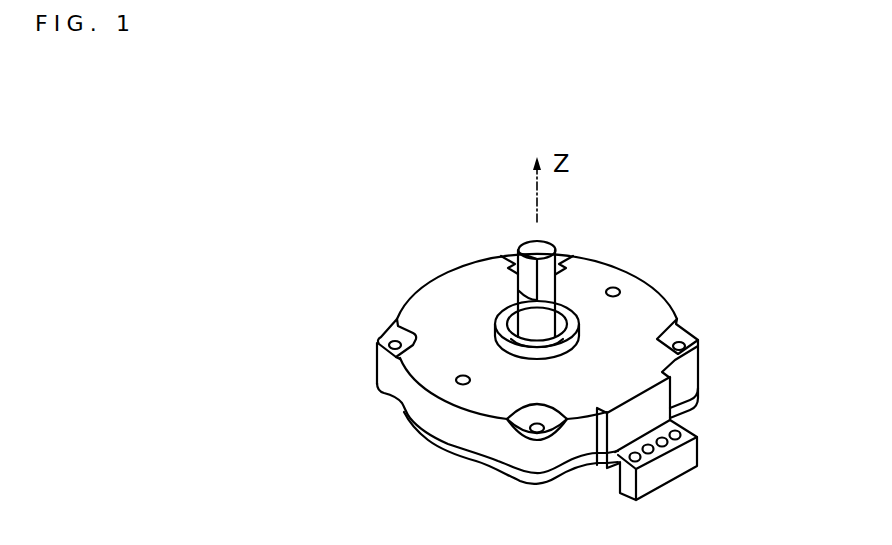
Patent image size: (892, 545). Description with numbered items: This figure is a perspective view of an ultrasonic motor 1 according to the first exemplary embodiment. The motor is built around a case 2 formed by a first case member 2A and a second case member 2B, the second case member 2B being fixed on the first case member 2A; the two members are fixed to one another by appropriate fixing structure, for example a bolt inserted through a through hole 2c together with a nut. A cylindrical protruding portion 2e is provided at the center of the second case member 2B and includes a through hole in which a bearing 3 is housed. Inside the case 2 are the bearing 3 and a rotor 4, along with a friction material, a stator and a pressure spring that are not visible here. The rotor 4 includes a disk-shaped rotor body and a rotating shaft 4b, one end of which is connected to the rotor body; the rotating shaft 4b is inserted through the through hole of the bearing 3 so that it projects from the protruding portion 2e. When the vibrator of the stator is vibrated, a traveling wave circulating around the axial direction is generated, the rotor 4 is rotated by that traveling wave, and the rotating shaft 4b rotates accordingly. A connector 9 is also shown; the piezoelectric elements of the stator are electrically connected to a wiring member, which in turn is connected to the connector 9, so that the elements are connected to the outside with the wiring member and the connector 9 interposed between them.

The ultrasonic motor 1 is at (259, 212).
The case 2 is at (272, 352).
The first case member 2A is at (400, 408).
The second case member 2B is at (387, 367).
The through hole 2c is at (698, 347).
The cylindrical protruding portion 2e is at (560, 301).
The bearing 3 is at (497, 323).
The rotor 4 is at (556, 254).
The rotating shaft 4b is at (543, 283).
The connector 9 is at (698, 441).